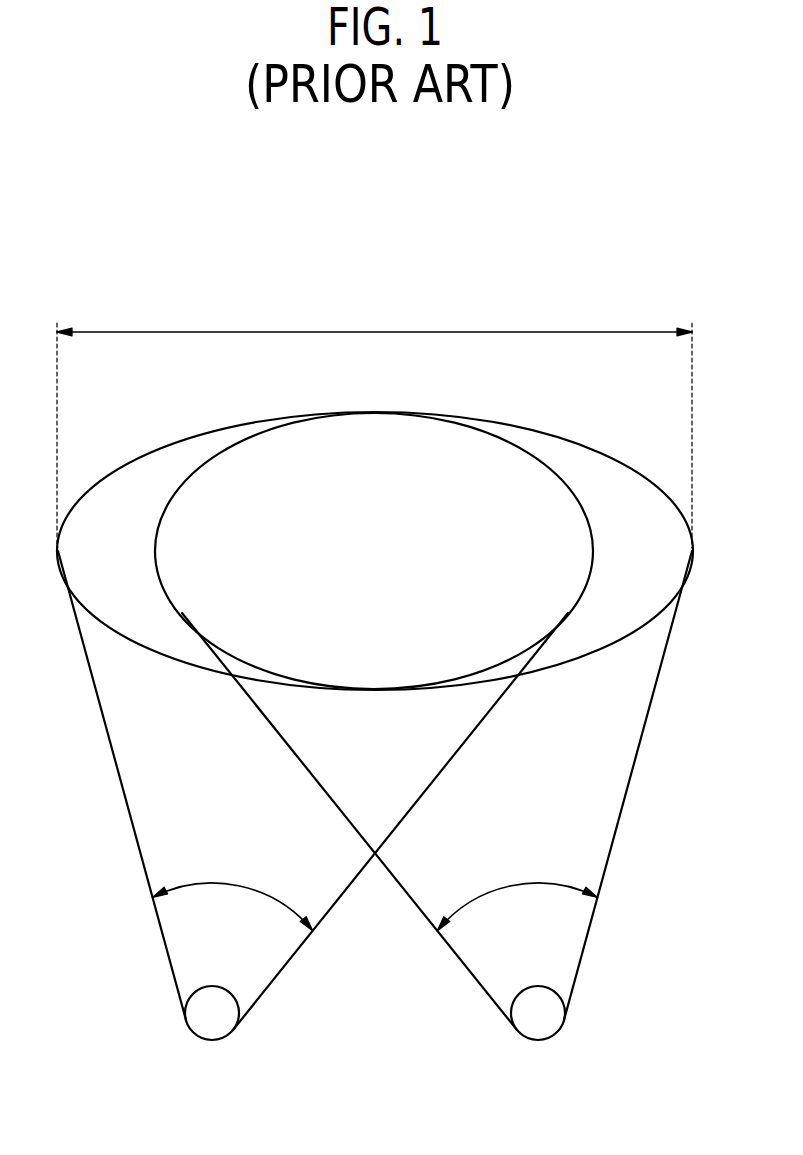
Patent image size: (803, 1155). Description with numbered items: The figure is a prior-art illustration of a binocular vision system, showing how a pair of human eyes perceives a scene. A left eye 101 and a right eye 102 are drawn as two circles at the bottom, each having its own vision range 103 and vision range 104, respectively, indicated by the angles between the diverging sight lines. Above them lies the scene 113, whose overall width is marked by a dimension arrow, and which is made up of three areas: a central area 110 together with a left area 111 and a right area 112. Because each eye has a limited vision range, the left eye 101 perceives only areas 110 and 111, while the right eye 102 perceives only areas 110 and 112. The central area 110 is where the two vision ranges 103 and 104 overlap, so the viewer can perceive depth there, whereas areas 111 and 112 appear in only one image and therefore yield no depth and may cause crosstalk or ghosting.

The left eye 101 is at (212, 1030).
The right eye 102 is at (538, 1030).
The vision range 103 is at (313, 790).
The vision range 104 is at (437, 790).
The area 110 is at (374, 551).
The area 111 is at (216, 551).
The area 112 is at (534, 551).
The scene 113 is at (374, 422).